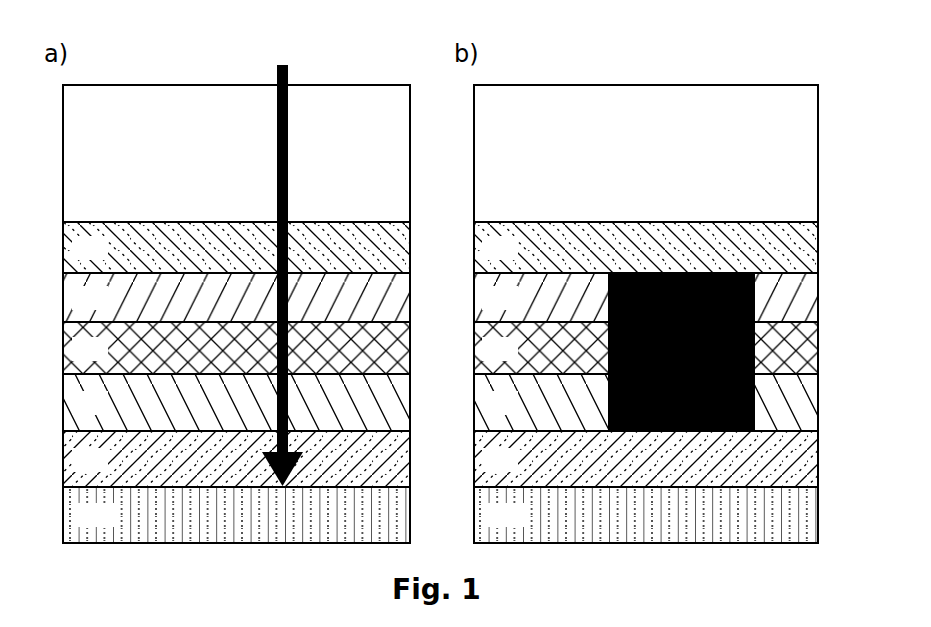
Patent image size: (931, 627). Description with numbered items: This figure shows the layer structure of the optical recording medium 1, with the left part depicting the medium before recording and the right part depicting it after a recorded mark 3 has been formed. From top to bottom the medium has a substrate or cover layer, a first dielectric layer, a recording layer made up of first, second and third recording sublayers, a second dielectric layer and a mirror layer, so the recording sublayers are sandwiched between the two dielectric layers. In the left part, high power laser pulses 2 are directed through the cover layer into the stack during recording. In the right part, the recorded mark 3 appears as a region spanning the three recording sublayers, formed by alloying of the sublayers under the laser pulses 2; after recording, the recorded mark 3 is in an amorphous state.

The optical recording medium 1 is at (358, 84).
The high power laser pulses 2 is at (276, 66).
The recorded mark 3 is at (607, 273).